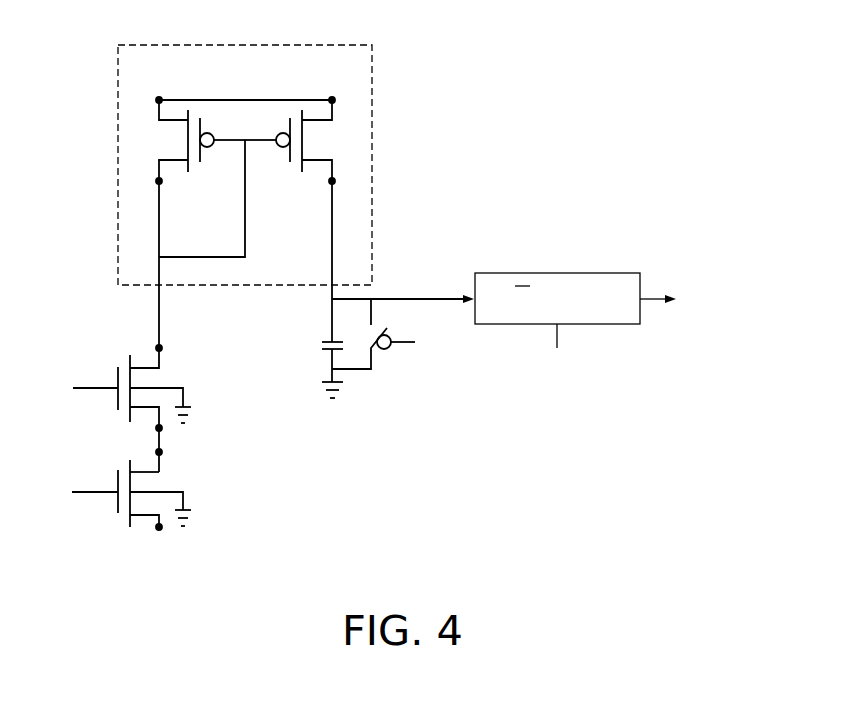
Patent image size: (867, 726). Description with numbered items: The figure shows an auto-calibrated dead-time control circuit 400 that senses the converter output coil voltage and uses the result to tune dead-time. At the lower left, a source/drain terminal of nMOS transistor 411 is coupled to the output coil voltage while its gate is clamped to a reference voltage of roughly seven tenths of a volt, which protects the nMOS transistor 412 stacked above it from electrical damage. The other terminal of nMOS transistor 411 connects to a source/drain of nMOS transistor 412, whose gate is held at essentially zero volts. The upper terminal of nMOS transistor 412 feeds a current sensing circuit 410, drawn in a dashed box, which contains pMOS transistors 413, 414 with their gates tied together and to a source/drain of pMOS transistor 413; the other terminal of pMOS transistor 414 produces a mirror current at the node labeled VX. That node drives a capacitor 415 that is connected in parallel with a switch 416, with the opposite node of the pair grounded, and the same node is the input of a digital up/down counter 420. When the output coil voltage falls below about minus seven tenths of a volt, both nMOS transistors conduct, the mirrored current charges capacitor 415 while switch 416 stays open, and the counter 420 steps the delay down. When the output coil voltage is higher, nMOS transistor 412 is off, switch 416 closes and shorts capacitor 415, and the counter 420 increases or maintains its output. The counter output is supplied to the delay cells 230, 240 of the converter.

The auto-calibrated dead-time control circuit 400 is at (572, 90).
The current sensing circuit 410 is at (338, 87).
The nMOS transistor 411 is at (123, 527).
The nMOS transistor 412 is at (123, 355).
The pMOS transistor 413 is at (202, 160).
The pMOS transistor 414 is at (285, 160).
The capacitor 415 is at (322, 352).
The switch 416 is at (387, 352).
The digital up/down counter 420 is at (595, 273).
The delay cell 230 is at (700, 363).
The delay cell 240 is at (775, 363).